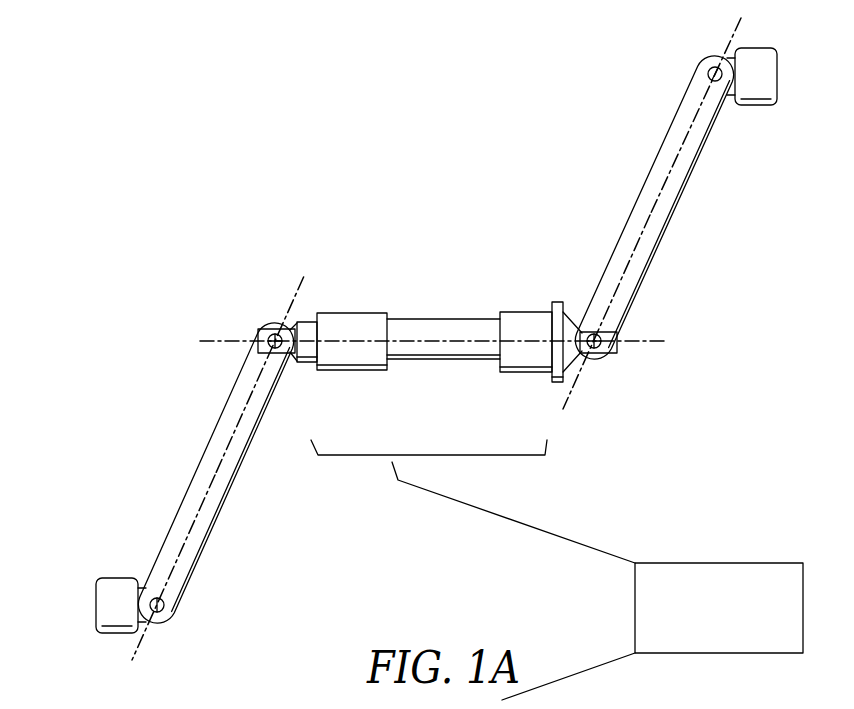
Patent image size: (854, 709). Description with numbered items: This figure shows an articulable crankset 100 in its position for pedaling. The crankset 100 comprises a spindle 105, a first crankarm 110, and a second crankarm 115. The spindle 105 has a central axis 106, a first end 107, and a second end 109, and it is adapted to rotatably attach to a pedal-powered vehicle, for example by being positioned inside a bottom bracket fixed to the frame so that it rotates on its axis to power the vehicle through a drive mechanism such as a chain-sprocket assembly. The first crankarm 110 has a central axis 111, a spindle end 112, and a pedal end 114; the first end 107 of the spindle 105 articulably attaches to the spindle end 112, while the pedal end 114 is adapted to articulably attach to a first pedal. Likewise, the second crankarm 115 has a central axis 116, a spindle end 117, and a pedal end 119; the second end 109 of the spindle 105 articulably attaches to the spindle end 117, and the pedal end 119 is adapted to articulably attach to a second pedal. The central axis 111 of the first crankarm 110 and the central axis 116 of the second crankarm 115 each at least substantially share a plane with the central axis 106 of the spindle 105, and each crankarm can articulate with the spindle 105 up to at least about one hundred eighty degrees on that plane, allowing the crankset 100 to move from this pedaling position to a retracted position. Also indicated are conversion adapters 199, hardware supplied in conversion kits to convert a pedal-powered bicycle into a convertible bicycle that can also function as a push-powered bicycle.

The crankset 100 is at (159, 116).
The spindle 105 is at (448, 357).
The central axis 106 is at (652, 336).
The first end 107 is at (267, 332).
The second end 109 is at (588, 356).
The first crankarm 110 is at (240, 478).
The central axis 111 is at (135, 655).
The spindle end 112 is at (272, 325).
The pedal end 114 is at (168, 607).
The second crankarm 115 is at (677, 215).
The central axis 116 is at (735, 33).
The spindle end 117 is at (615, 349).
The pedal end 119 is at (706, 74).
The conversion adapters 199 is at (557, 570).